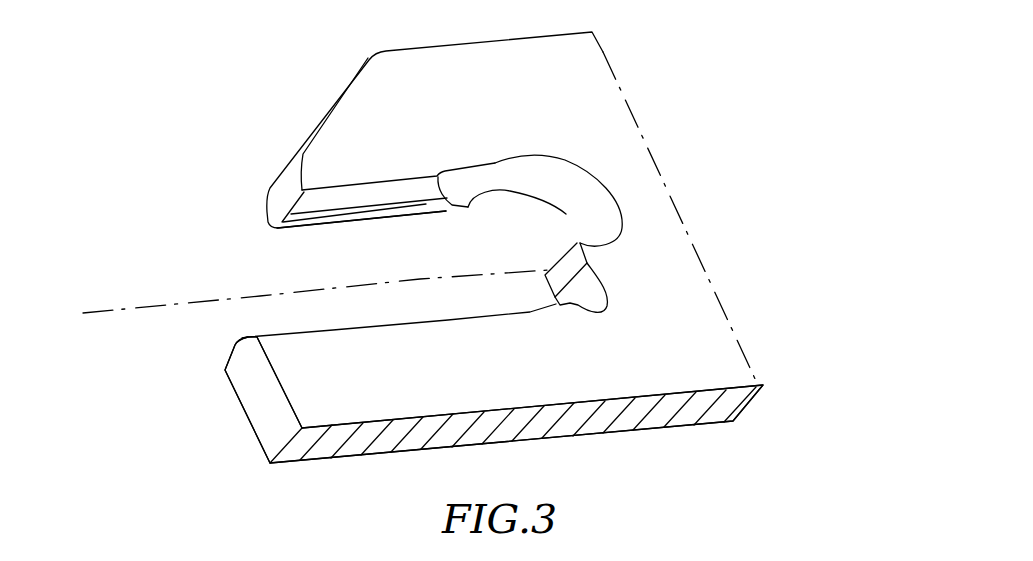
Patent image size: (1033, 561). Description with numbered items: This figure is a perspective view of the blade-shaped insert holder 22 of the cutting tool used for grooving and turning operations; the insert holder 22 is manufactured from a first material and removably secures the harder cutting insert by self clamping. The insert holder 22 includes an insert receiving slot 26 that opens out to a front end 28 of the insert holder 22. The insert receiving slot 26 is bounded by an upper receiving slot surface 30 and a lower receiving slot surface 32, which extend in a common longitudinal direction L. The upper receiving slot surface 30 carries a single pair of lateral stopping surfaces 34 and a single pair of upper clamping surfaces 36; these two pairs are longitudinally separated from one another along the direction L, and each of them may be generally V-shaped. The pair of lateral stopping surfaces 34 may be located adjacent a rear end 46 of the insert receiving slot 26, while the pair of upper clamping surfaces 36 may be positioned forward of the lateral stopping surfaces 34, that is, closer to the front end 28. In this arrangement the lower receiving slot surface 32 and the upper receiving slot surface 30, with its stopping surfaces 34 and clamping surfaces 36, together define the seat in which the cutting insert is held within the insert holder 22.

The insert holder 22 is at (308, 115).
The insert receiving slot 26 is at (342, 307).
The front end 28 is at (265, 382).
The upper receiving slot surface 30 is at (412, 240).
The lower receiving slot surface 32 is at (423, 313).
The lateral stopping surfaces 34 is at (442, 216).
The upper clamping surfaces 36 is at (322, 222).
The rear end 46 is at (554, 246).
The longitudinal direction L is at (304, 300).